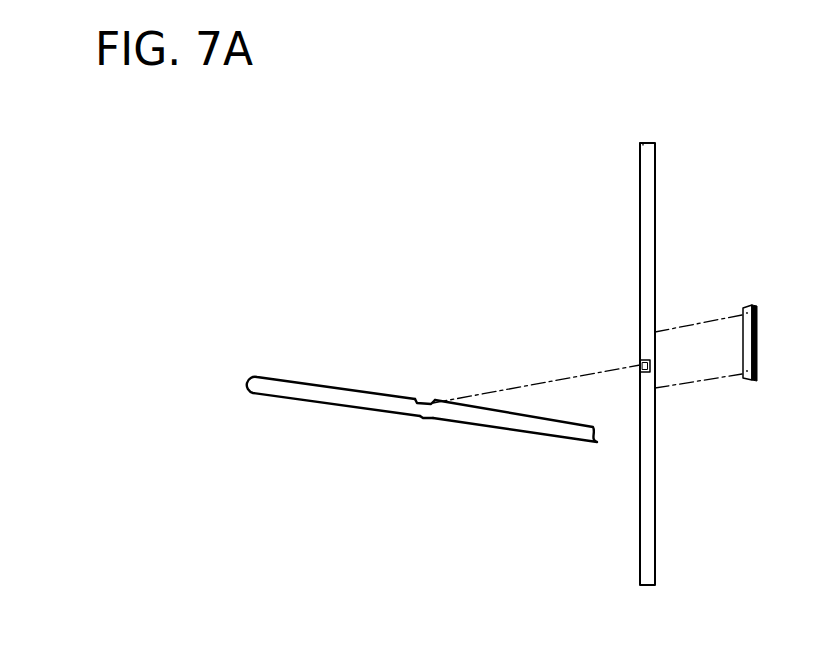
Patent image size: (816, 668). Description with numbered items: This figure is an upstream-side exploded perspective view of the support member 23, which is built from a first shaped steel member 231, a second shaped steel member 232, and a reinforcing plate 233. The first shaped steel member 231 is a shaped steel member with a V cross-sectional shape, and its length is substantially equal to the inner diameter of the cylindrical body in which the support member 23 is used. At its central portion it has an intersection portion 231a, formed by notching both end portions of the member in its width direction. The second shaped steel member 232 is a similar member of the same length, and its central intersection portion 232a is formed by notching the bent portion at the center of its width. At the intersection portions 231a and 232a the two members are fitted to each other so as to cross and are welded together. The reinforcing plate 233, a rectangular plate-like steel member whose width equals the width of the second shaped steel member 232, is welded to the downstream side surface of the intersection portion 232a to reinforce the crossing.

The support member 23 is at (289, 185).
The first shaped steel member 231 is at (300, 382).
The intersection portion 231a is at (423, 419).
The second shaped steel member 232 is at (655, 187).
The intersection portion 232a is at (639, 361).
The reinforcing plate 233 is at (757, 341).